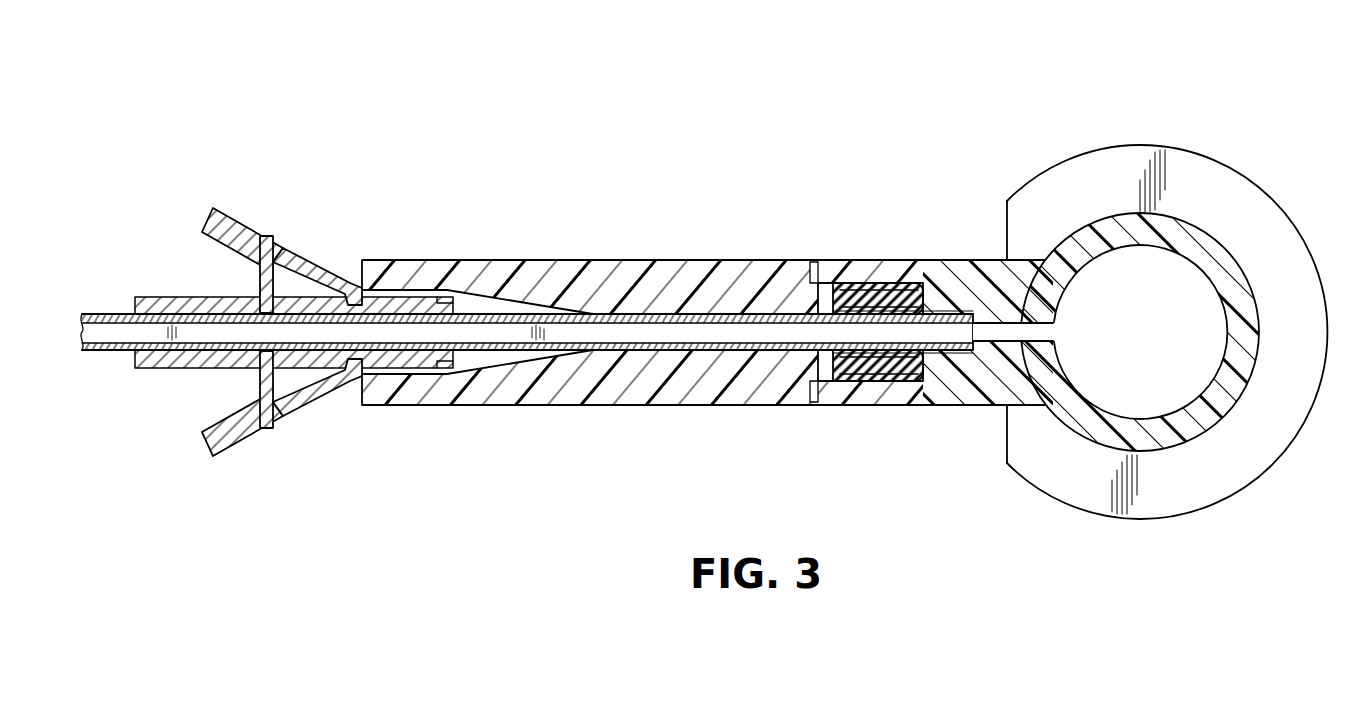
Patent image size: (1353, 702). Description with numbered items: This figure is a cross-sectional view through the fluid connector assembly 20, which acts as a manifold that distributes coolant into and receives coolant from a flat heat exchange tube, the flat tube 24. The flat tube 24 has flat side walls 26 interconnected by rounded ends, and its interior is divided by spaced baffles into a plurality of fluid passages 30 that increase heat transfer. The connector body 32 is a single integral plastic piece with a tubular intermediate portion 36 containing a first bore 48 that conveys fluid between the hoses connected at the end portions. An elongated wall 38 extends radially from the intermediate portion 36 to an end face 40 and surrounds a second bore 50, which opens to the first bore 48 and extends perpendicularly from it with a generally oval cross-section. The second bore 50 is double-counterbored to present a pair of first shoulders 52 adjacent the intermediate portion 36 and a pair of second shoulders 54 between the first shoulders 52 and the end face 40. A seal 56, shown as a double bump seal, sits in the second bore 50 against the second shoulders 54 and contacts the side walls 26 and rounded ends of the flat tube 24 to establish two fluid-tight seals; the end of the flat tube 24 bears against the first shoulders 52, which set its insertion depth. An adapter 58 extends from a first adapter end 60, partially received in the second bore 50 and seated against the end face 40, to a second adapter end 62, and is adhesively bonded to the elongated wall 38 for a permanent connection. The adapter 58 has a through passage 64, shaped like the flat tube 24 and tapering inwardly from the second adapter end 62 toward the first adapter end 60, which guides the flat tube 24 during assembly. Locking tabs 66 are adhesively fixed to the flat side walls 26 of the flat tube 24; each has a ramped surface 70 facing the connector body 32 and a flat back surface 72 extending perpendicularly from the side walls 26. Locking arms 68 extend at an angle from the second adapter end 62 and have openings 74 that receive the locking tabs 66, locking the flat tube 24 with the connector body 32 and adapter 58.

The fluid connector assembly 20 is at (946, 98).
The flat tube 24 is at (95, 308).
The flat side walls 26 is at (110, 312).
The fluid passages 30 is at (137, 337).
The connector body 32 is at (1265, 188).
The tubular intermediate portion 36 is at (1207, 240).
The elongated wall 38 is at (972, 260).
The end face 40 is at (800, 262).
The first bore 48 is at (1140, 332).
The second bore 50 is at (1014, 330).
The first shoulders 52 is at (953, 352).
The second shoulders 54 is at (885, 381).
The seal 56 is at (838, 293).
The adapter 58 is at (660, 407).
The first adapter end 60 is at (840, 283).
The second adapter end 62 is at (353, 404).
The through passage 64 is at (310, 250).
The locking tabs 66 is at (302, 422).
The locking arms 68 is at (222, 204).
The ramped surface 70 is at (315, 283).
The flat back surface 72 is at (260, 283).
The openings 74 is at (265, 250).